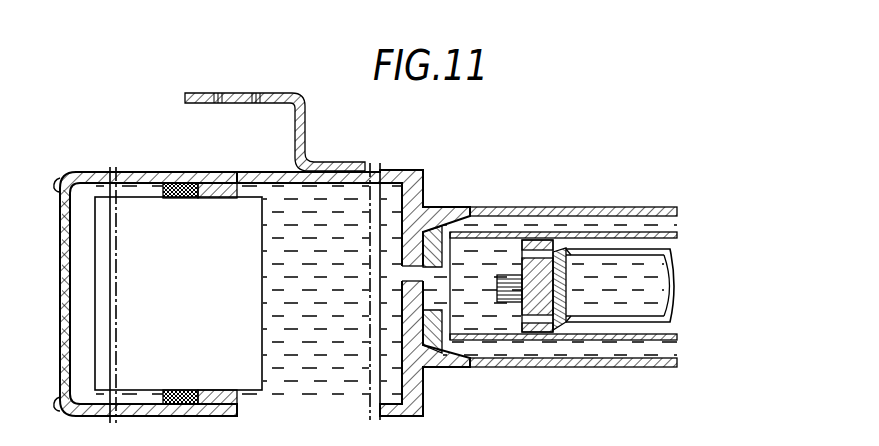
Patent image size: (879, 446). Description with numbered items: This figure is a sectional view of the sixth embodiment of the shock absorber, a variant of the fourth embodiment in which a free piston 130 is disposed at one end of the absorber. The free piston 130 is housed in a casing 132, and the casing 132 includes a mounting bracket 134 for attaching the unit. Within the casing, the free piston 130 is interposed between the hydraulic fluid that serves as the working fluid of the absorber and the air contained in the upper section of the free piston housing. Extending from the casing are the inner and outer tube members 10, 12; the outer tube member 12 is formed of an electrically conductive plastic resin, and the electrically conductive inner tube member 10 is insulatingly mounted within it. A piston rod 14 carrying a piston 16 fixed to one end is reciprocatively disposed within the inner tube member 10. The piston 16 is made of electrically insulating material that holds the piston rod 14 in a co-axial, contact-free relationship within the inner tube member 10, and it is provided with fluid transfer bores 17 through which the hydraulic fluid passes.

The free piston 130 is at (135, 264).
The casing 132 is at (269, 177).
The mounting bracket 134 is at (198, 100).
The outer tube member 12 is at (503, 368).
The inner tube member 10 is at (583, 341).
The piston 16 is at (535, 242).
The fluid transfer bores 17 is at (565, 242).
The piston rod 14 is at (632, 307).